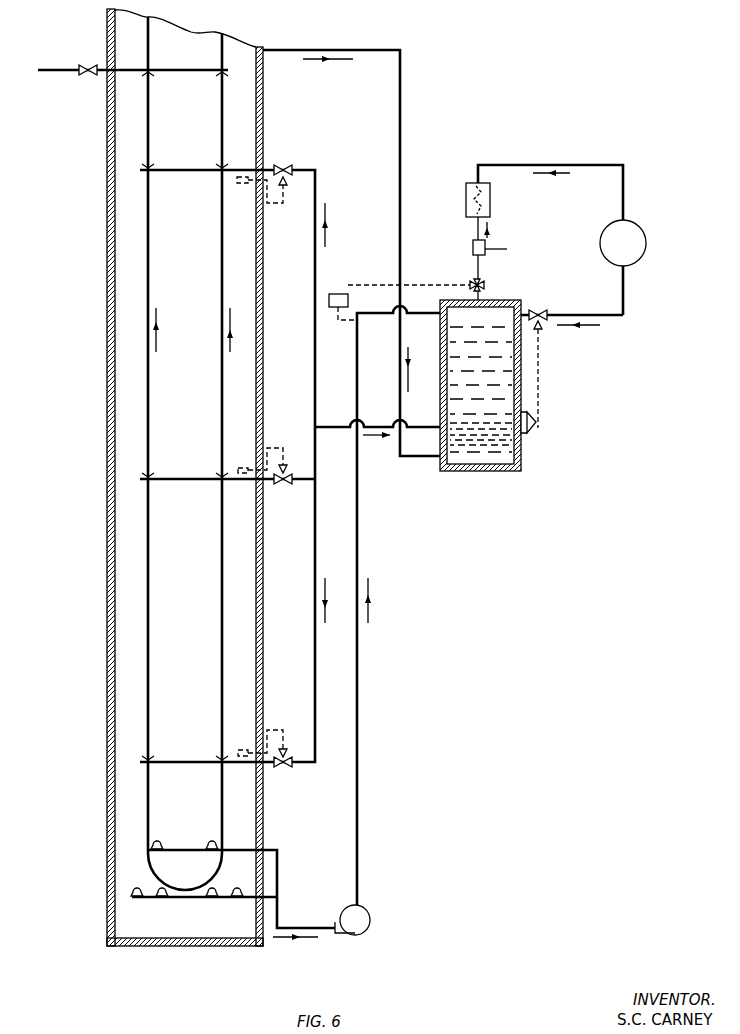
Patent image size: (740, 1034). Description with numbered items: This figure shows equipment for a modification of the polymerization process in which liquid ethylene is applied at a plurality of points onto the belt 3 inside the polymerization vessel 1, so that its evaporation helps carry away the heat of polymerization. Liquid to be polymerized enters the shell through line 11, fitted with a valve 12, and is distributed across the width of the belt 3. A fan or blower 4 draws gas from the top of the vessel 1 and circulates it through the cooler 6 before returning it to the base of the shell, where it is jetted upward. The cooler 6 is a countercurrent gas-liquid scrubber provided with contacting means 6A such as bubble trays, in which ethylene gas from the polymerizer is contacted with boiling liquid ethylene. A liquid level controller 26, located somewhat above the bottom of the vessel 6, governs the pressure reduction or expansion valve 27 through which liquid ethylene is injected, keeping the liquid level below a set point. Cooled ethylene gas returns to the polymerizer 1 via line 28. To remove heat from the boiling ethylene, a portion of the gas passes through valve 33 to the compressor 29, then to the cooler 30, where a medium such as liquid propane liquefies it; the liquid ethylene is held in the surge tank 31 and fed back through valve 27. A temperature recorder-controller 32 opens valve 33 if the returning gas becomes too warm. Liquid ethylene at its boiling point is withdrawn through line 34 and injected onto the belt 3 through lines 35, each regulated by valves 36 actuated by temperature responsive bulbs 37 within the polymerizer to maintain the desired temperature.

The polymerization vessel 1 is at (263, 570).
The belt 3 is at (148, 234).
The fan or blower 4 is at (370, 910).
The cooler 6 is at (520, 455).
The contacting means 6A is at (497, 356).
The line 11 is at (55, 67).
The feed valve 12 is at (88, 75).
The liquid level controller 26 is at (528, 437).
The pressure reduction or expansion valve 27 is at (543, 320).
The line 28 is at (422, 316).
The compressor 29 is at (473, 247).
The cooler 30 is at (490, 203).
The surge tank 31 is at (647, 235).
The temperature recorder-controller 32 is at (333, 308).
The valve 33 is at (483, 283).
The line 34 is at (415, 425).
The lines 35 is at (302, 167).
The valves 36 is at (283, 166).
The temperature responsive bulbs 37 is at (243, 184).